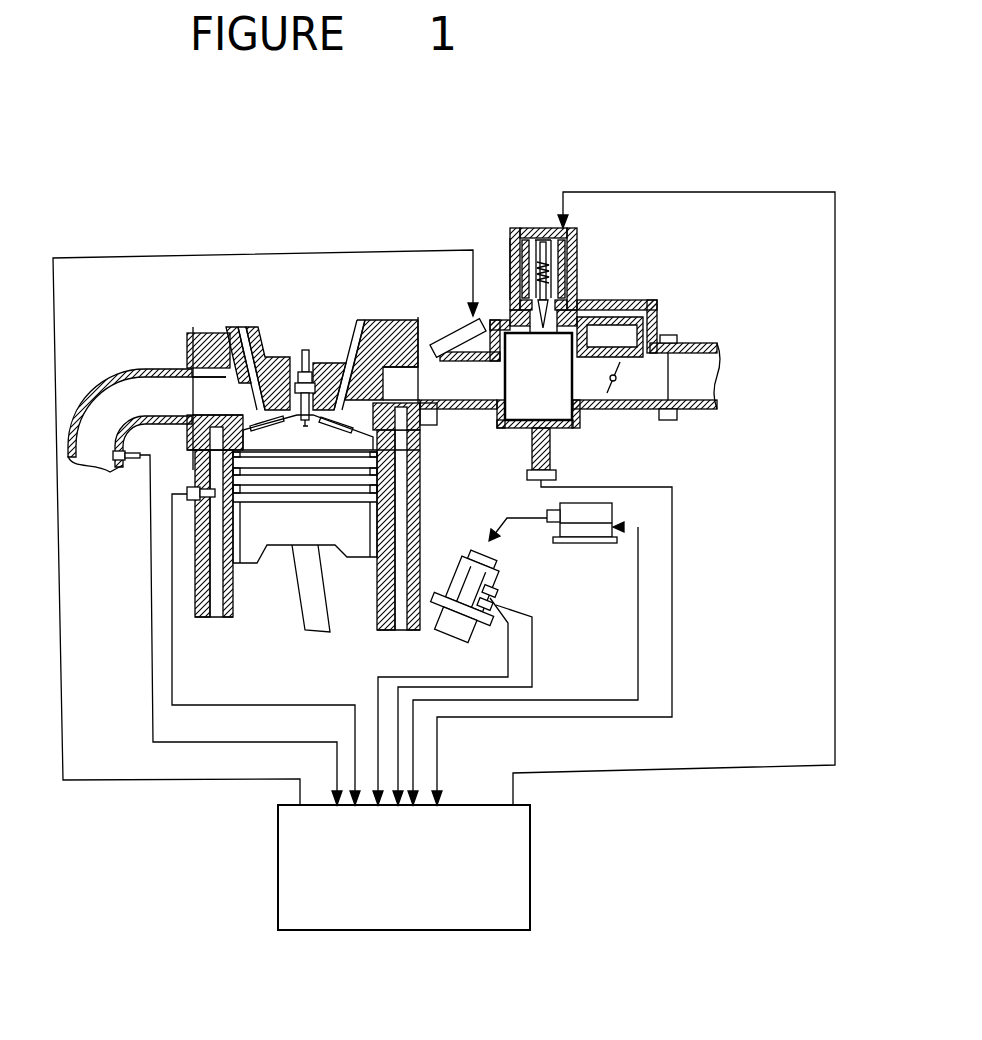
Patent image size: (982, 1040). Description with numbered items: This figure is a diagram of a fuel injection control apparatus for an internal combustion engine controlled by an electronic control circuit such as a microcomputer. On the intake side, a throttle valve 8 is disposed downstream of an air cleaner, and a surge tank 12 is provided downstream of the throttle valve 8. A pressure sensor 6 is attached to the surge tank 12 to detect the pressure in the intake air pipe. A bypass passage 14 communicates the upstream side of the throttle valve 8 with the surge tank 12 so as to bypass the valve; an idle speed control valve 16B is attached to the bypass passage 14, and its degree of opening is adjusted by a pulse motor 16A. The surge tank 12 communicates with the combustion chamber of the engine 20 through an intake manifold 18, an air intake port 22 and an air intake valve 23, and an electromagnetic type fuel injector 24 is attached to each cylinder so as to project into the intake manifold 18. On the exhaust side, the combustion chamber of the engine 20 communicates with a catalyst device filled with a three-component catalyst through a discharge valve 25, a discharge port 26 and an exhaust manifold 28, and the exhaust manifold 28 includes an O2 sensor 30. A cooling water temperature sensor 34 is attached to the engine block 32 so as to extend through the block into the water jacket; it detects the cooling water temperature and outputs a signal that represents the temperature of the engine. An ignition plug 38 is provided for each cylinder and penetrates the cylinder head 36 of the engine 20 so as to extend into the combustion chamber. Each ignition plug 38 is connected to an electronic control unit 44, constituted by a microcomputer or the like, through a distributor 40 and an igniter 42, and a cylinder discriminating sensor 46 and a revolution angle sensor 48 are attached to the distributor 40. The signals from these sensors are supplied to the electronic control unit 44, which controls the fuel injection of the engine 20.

The pressure sensor 6 is at (507, 518).
The throttle valve 8 is at (609, 395).
The surge tank 12 is at (495, 423).
The bypass passage 14 is at (620, 302).
The pulse motor 16A is at (605, 273).
The idle speed control valve 16B is at (510, 317).
The intake manifold 18 is at (443, 411).
The engine 20 is at (283, 326).
The air intake port 22 is at (396, 383).
The air intake valve 23 is at (341, 328).
The fuel injector 24 is at (455, 337).
The discharge valve 25 is at (230, 372).
The discharge port 26 is at (207, 392).
The exhaust manifold 28 is at (107, 381).
The O2 sensor 30 is at (130, 470).
The engine block 32 is at (197, 573).
The cooling water temperature sensor 34 is at (197, 512).
The cylinder head 36 is at (193, 330).
The ignition plug 38 is at (316, 352).
The distributor 40 is at (483, 563).
The igniter 42 is at (580, 544).
The electronic control unit 44 is at (532, 856).
The cylinder discriminating sensor 46 is at (497, 597).
The revolution angle sensor 48 is at (482, 606).